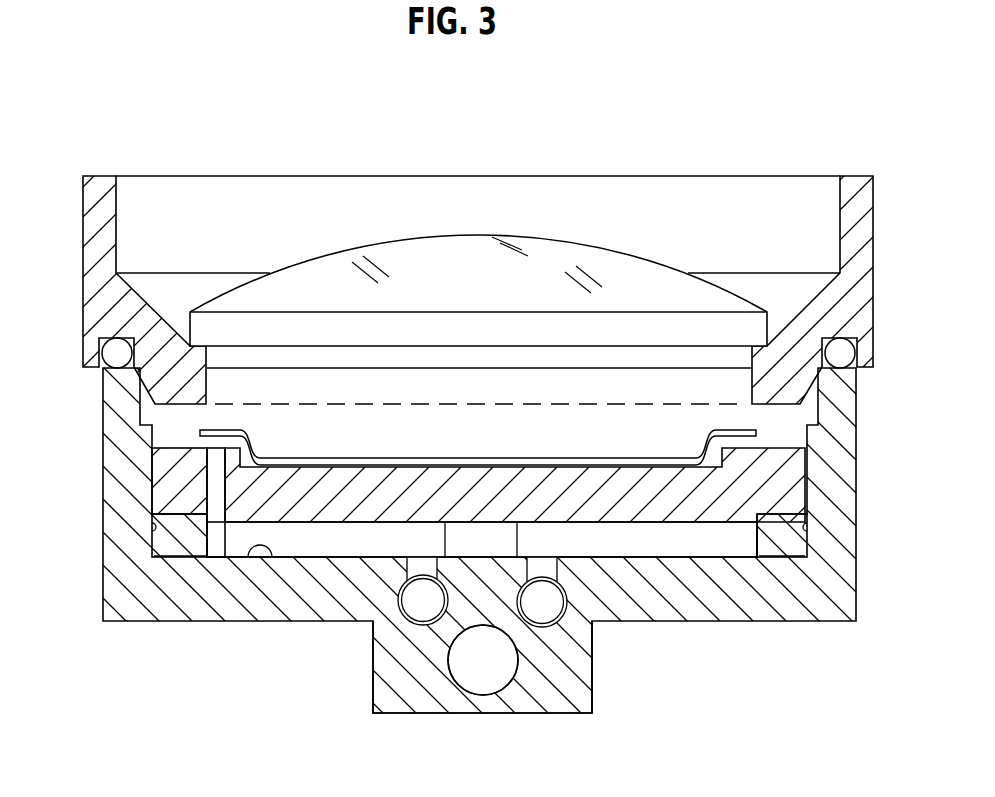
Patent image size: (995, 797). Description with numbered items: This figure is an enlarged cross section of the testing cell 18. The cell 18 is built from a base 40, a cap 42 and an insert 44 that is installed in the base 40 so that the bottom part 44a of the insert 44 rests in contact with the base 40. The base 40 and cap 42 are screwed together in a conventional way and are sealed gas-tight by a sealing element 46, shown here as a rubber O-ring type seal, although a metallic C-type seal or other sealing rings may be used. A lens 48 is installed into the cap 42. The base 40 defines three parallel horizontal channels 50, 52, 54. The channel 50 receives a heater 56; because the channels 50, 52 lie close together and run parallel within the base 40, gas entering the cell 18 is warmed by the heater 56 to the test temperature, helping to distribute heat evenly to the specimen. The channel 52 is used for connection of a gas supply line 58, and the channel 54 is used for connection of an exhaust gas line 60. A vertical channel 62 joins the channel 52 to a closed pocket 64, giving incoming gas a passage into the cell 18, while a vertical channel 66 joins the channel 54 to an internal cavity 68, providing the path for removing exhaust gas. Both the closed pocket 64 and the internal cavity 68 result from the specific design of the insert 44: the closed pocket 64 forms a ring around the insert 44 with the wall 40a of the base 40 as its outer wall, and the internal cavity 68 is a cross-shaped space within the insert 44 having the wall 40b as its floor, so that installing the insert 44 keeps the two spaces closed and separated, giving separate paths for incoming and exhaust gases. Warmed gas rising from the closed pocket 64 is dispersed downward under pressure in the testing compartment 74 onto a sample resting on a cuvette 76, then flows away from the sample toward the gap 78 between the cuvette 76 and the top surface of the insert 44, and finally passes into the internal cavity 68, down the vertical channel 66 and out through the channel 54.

The cell 18 is at (501, 264).
The base 40 is at (486, 574).
The wall 40a is at (157, 528).
The wall 40b is at (258, 552).
The cap 42 is at (857, 302).
The insert 44 is at (797, 468).
The bottom part 44a is at (200, 537).
The sealing element 46 is at (100, 368).
The lens 48 is at (406, 238).
The channel 50 is at (507, 700).
The channel 52 is at (395, 702).
The channel 54 is at (590, 660).
The heater 56 is at (477, 673).
The gas supply line 58 is at (418, 608).
The exhaust gas line 60 is at (548, 612).
The vertical channel 62 is at (407, 574).
The closed pocket 64 is at (165, 550).
The vertical channel 66 is at (553, 574).
The internal cavity 68 is at (212, 548).
The testing compartment 74 is at (440, 430).
The cuvette 76 is at (232, 430).
The gap 78 is at (482, 292).